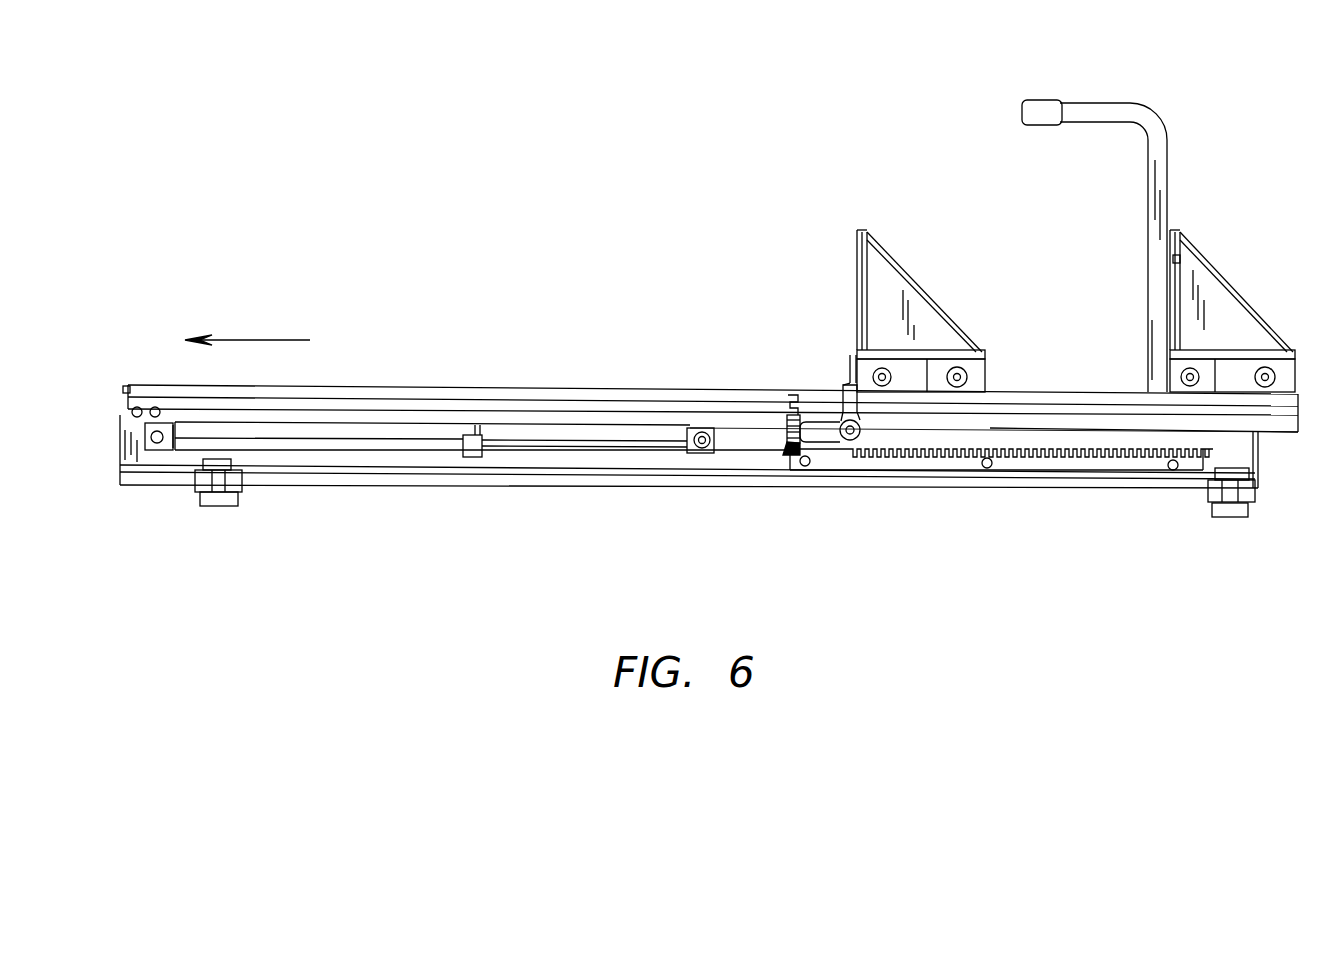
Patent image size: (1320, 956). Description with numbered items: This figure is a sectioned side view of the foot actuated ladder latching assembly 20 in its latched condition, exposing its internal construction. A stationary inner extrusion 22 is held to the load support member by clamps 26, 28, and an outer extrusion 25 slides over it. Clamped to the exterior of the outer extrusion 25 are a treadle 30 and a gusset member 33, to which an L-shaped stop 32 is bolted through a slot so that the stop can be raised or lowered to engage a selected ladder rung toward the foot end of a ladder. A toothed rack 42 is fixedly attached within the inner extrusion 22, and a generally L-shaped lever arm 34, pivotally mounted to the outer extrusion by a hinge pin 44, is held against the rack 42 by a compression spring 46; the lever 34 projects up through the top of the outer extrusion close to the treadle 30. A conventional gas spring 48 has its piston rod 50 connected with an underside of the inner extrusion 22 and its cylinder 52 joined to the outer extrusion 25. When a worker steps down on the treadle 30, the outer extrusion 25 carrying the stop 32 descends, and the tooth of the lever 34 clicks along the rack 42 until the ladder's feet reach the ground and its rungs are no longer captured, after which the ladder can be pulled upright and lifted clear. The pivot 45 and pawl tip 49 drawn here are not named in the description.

The latching assembly 20 is at (549, 250).
The inner extrusion 22 is at (160, 456).
The outer extrusion 25 is at (456, 385).
The clamp 26 is at (213, 507).
The clamp 28 is at (1237, 518).
The treadle 30 is at (860, 229).
The L-shaped stop 32 is at (1122, 101).
The gusset member 33 is at (1205, 283).
The lever arm 34 is at (855, 358).
The toothed rack 42 is at (930, 462).
The hinge pin 44 is at (266, 340).
The pivot 45 is at (847, 442).
The compression spring 46 is at (793, 444).
The gas spring 48 is at (412, 470).
The pawl tip 49 is at (784, 452).
The piston rod 50 is at (583, 440).
The cylinder 52 is at (335, 441).